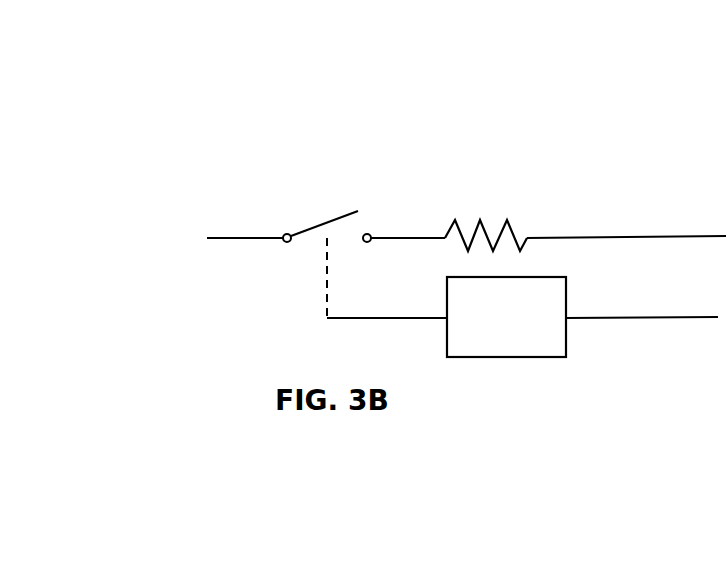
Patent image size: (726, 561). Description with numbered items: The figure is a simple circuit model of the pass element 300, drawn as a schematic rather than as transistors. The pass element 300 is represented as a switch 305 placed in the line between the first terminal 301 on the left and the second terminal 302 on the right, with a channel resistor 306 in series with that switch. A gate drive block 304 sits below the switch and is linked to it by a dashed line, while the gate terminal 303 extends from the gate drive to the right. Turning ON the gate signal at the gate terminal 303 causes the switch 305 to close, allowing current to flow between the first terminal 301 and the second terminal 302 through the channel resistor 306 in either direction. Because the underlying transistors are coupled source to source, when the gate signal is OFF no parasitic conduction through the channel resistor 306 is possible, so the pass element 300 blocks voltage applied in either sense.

The pass element 300 is at (527, 114).
The first terminal 301 is at (267, 241).
The second terminal 302 is at (613, 238).
The gate terminal 303 is at (622, 318).
The gate drive 304 is at (527, 358).
The switch 305 is at (336, 213).
The channel resistor 306 is at (505, 228).